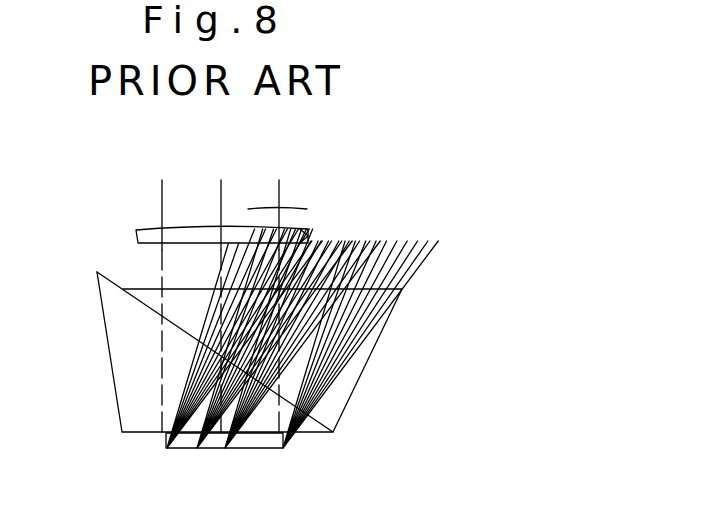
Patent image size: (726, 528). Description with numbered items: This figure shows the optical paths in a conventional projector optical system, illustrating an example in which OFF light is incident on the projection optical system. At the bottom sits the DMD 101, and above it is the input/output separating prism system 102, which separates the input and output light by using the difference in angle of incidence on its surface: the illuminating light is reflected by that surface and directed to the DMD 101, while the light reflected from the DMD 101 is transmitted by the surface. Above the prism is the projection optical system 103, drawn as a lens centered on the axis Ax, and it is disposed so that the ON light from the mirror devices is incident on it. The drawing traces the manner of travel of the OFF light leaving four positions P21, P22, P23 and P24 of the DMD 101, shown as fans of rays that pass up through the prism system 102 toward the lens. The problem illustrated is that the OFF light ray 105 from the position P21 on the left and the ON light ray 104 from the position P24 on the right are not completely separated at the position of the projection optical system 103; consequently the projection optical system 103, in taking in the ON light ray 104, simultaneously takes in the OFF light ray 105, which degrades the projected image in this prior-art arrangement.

The DMD 101 is at (300, 447).
The input/output separating prism system 102 is at (104, 356).
The projection optical system 103 is at (142, 237).
The ON light ray 104 is at (280, 197).
The OFF light ray 105 is at (306, 228).
The optical axis Ax is at (221, 192).
The position P21 is at (166, 449).
The position P22 is at (197, 449).
The position P23 is at (225, 449).
The position P24 is at (283, 449).